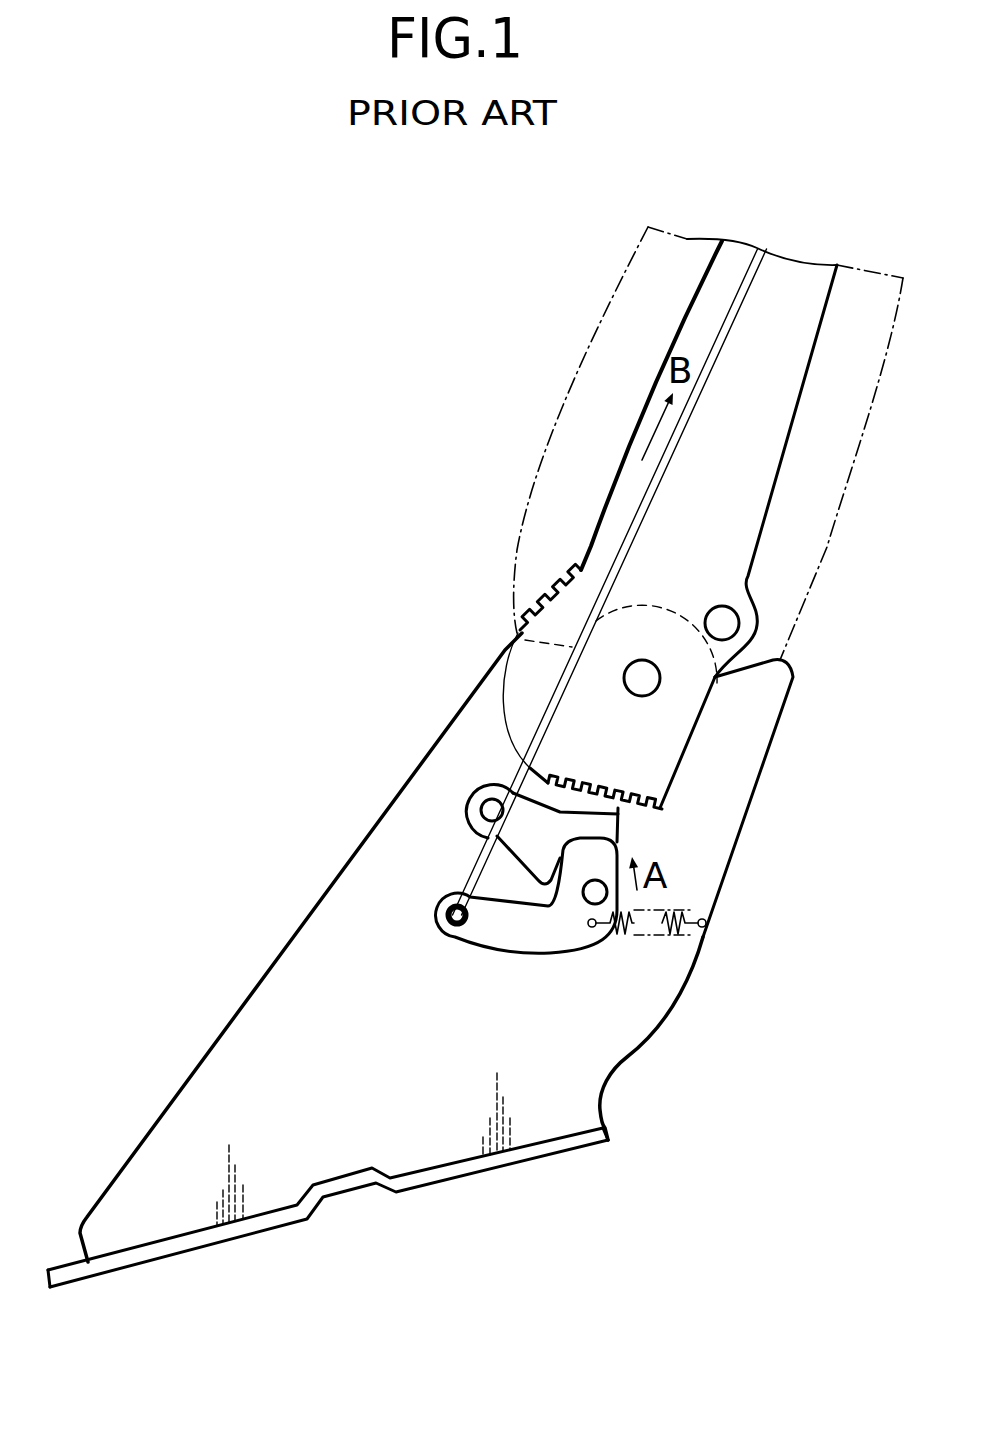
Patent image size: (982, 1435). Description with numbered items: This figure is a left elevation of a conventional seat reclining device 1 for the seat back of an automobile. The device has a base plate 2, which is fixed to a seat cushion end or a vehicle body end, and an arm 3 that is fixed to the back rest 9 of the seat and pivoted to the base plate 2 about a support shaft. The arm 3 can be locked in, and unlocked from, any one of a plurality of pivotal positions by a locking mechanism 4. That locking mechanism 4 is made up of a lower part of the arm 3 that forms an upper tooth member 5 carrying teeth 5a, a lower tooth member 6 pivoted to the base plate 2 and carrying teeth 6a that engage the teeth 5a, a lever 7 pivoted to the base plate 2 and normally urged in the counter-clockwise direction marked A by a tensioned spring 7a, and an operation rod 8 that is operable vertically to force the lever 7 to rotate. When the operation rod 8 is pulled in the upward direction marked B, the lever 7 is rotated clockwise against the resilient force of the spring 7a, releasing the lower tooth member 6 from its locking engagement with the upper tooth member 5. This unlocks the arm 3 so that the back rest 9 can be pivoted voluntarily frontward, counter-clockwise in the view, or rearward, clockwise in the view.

The seat reclining device 1 is at (458, 522).
The base plate 2 is at (307, 943).
The arm 3 is at (688, 299).
The locking mechanism 4 is at (452, 852).
The upper tooth member 5 is at (665, 770).
The teeth 5a is at (647, 812).
The lower tooth member 6 is at (467, 793).
The teeth 6a is at (613, 797).
The lever 7 is at (525, 935).
The spring 7a is at (620, 937).
The operation rod 8 is at (547, 697).
The back rest 9 is at (587, 350).